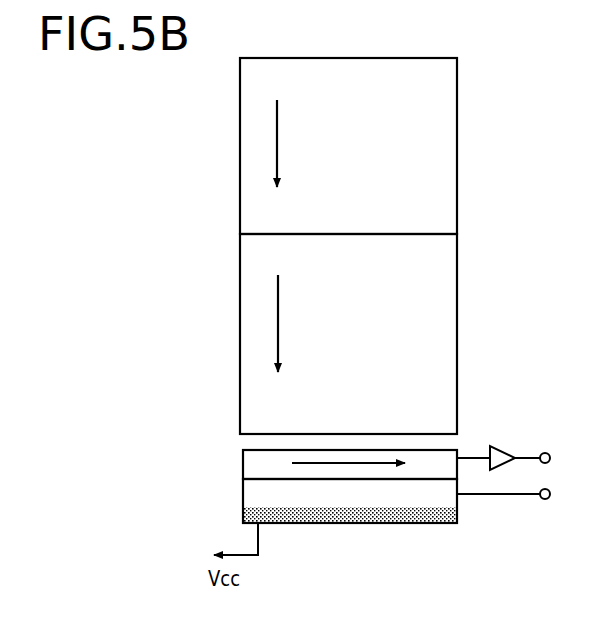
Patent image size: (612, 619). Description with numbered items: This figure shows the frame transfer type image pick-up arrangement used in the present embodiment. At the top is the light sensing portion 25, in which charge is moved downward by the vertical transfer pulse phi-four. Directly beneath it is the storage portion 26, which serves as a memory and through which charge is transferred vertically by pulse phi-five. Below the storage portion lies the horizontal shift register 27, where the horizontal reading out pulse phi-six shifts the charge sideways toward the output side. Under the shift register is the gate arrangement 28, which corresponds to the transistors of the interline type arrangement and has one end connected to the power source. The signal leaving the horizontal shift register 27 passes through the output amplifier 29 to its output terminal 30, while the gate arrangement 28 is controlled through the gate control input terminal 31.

The light sensing portion 25 is at (444, 176).
The storage portion 26 is at (442, 323).
The horizontal shift register 27 is at (251, 464).
The gate arrangement 28 is at (251, 500).
The output amplifier 29 is at (505, 447).
The output terminal 30 is at (551, 458).
The gate control input terminal 31 is at (551, 494).